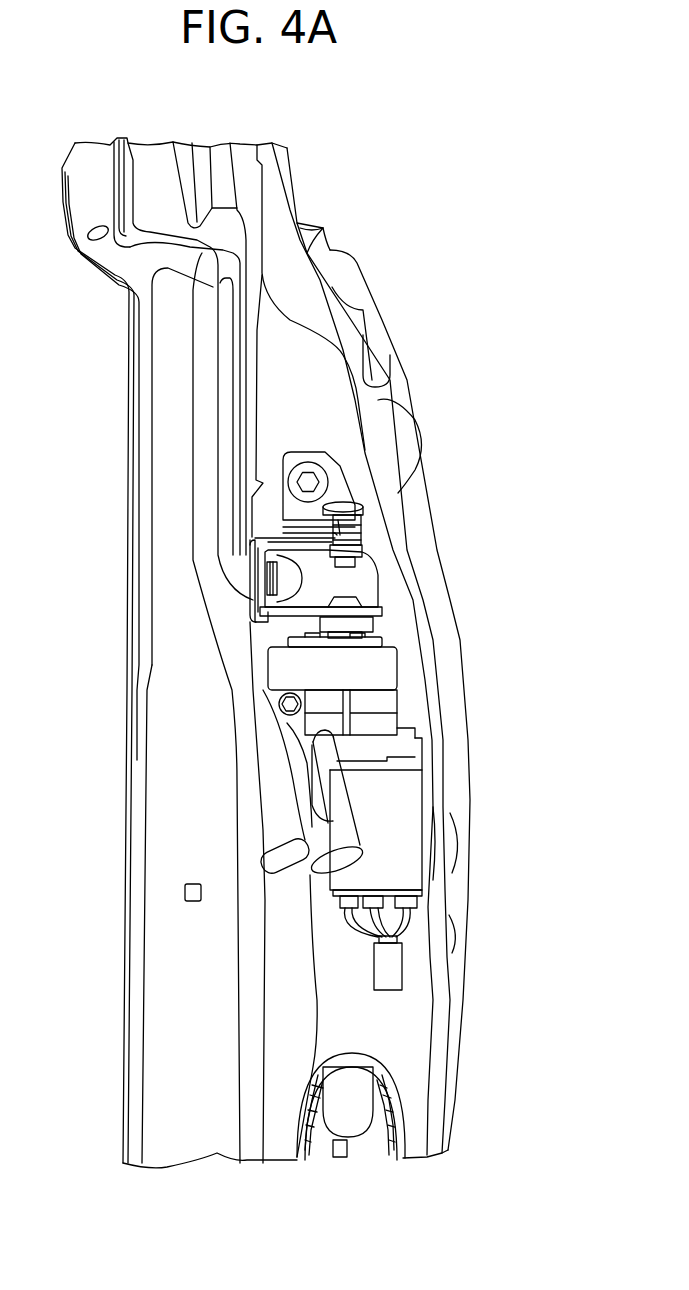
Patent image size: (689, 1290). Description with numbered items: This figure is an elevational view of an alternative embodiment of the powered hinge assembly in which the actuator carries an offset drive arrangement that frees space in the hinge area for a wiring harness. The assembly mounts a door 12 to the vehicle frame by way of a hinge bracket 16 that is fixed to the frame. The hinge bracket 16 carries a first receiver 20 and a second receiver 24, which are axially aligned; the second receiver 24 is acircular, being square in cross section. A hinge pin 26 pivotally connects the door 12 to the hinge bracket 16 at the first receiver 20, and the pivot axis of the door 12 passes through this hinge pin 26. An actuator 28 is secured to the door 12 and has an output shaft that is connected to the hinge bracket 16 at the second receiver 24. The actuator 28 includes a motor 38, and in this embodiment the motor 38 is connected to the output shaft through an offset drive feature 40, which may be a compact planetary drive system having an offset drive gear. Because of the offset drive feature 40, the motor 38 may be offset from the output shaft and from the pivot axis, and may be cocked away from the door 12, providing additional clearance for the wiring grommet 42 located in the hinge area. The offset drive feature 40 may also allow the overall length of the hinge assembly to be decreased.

The door 12 is at (307, 380).
The hinge bracket 16 is at (253, 605).
The first receiver 20 is at (362, 513).
The second receiver 24 is at (353, 610).
The hinge pin 26 is at (347, 497).
The actuator 28 is at (405, 768).
The motor 38 is at (436, 810).
The offset drive feature 40 is at (405, 697).
The wiring grommet 42 is at (323, 843).